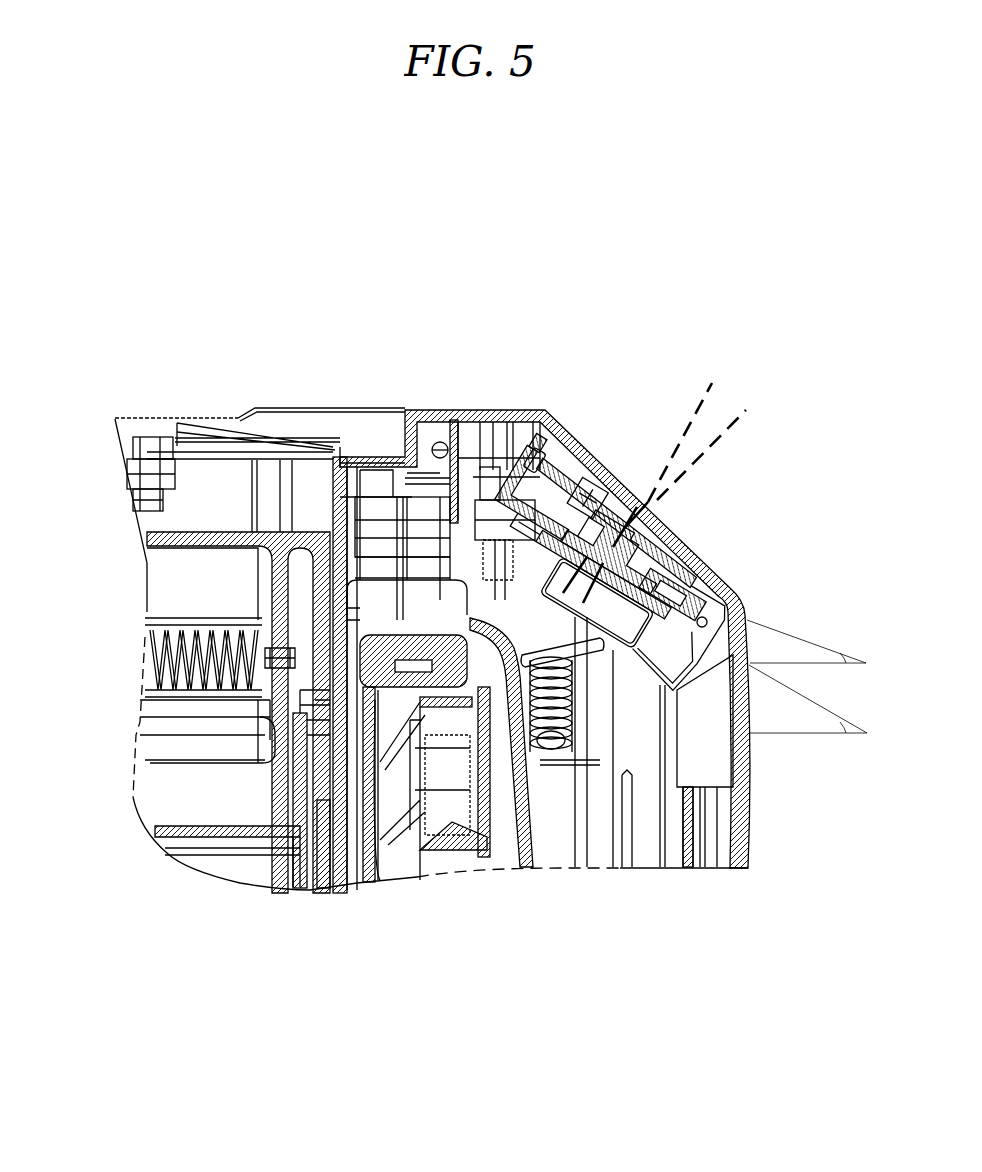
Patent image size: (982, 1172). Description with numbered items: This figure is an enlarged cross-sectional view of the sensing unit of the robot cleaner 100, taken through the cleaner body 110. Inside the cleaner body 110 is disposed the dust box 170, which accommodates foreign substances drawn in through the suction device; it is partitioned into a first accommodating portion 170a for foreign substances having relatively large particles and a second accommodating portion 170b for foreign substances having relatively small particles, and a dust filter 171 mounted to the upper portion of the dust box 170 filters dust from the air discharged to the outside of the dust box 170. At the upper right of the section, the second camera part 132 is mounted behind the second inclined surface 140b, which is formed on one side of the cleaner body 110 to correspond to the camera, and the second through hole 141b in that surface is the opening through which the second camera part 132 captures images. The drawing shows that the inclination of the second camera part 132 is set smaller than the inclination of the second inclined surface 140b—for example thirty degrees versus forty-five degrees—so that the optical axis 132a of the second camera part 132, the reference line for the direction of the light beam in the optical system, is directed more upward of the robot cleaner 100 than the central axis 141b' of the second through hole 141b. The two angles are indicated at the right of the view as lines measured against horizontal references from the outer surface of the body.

The robot cleaner 100 is at (116, 336).
The cleaner body 110 is at (463, 410).
The second camera part 132 is at (648, 533).
The optical axis 132a is at (693, 400).
The second inclined surface 140b is at (563, 432).
The second through hole 141b is at (612, 505).
The central axis 141b' is at (719, 421).
The dust box 170 is at (148, 960).
The first accommodating portion 170a is at (197, 807).
The second accommodating portion 170b is at (241, 860).
The dust filter 171 is at (200, 632).